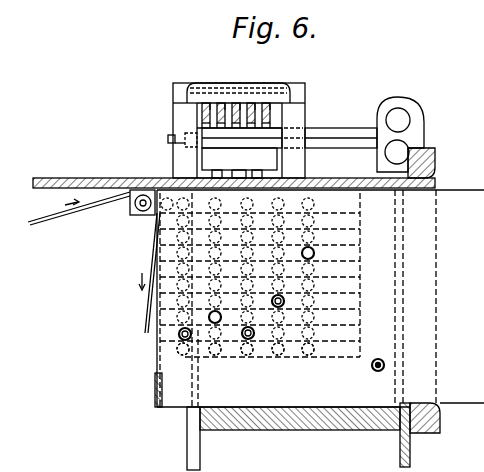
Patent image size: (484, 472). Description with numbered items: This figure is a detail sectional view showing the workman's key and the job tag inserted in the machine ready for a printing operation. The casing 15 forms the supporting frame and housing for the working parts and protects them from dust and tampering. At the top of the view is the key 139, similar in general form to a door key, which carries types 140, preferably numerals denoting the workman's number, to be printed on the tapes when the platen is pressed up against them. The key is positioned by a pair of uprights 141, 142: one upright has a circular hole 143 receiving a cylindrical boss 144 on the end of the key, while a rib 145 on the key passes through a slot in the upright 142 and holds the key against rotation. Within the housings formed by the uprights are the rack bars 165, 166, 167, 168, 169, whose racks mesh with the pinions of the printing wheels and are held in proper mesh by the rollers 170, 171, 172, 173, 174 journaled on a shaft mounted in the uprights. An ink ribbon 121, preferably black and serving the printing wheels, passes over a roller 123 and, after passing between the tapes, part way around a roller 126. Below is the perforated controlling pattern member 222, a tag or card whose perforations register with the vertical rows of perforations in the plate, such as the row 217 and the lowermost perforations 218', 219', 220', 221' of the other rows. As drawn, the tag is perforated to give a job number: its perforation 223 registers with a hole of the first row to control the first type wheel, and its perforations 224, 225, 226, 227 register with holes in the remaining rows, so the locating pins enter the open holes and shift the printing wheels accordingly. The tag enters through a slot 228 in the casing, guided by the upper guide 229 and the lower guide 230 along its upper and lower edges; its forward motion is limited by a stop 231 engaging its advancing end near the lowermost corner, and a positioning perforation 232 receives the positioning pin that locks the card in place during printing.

The casing 15 is at (410, 452).
The ink ribbon 121 is at (60, 218).
The roller 123 is at (130, 208).
The roller 126 is at (154, 214).
The key 139 is at (405, 112).
The types 140 is at (232, 172).
The upright 141 is at (173, 120).
The upright 142 is at (295, 120).
The circular hole 143 is at (183, 150).
The cylindrical boss 144 is at (167, 139).
The rib 145 is at (258, 138).
The rack bar 165 is at (272, 103).
The rack bar 166 is at (255, 103).
The rack bar 167 is at (238, 103).
The rack bar 168 is at (221, 103).
The rack bar 169 is at (207, 108).
The roller 170 is at (270, 92).
The roller 171 is at (255, 92).
The roller 172 is at (240, 92).
The roller 173 is at (225, 92).
The roller 174 is at (212, 92).
The vertical row of perforations 217 is at (318, 350).
The perforation 218' is at (285, 361).
The perforation 219' is at (245, 370).
The perforation 220' is at (220, 362).
The perforation 221' is at (153, 358).
The controlling pattern member 222 is at (456, 186).
The perforation 223 is at (314, 252).
The perforation 224 is at (284, 300).
The perforation 225 is at (252, 338).
The perforation 226 is at (209, 317).
The perforation 227 is at (179, 336).
The slot 228 is at (432, 172).
The upper guide 229 is at (336, 173).
The lower guide 230 is at (318, 415).
The stop 231 is at (154, 389).
The positioning perforation 232 is at (374, 369).